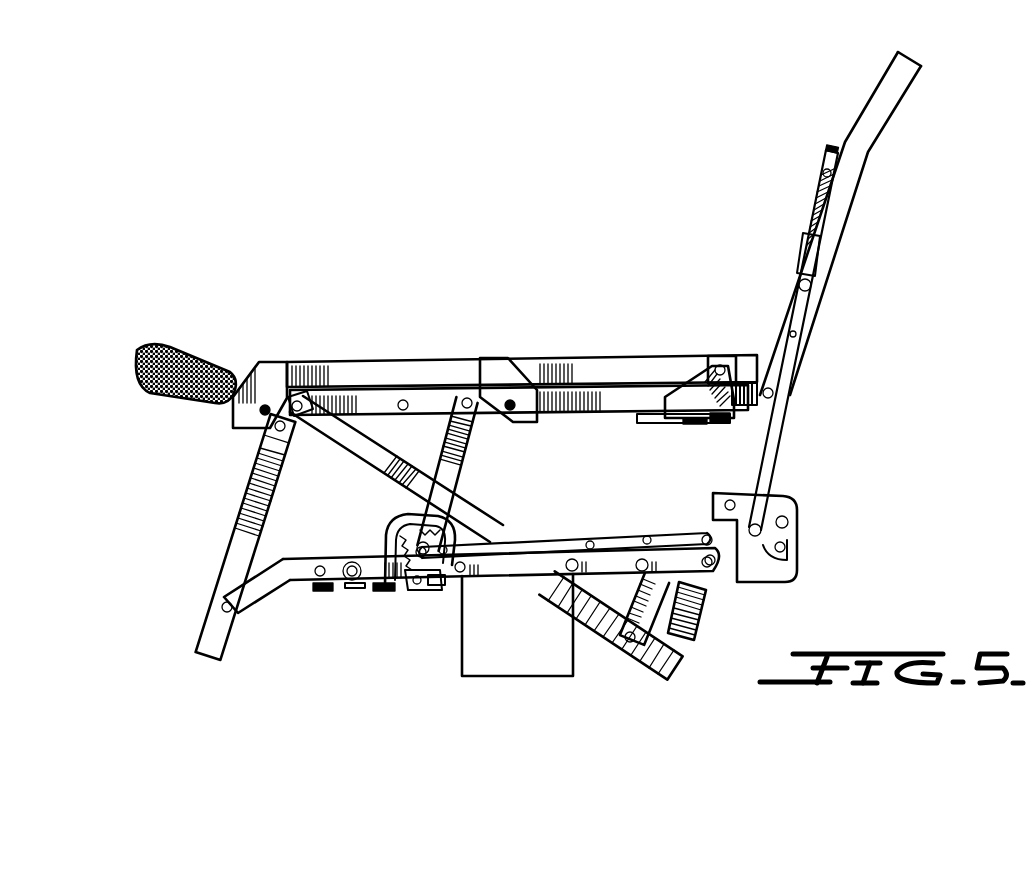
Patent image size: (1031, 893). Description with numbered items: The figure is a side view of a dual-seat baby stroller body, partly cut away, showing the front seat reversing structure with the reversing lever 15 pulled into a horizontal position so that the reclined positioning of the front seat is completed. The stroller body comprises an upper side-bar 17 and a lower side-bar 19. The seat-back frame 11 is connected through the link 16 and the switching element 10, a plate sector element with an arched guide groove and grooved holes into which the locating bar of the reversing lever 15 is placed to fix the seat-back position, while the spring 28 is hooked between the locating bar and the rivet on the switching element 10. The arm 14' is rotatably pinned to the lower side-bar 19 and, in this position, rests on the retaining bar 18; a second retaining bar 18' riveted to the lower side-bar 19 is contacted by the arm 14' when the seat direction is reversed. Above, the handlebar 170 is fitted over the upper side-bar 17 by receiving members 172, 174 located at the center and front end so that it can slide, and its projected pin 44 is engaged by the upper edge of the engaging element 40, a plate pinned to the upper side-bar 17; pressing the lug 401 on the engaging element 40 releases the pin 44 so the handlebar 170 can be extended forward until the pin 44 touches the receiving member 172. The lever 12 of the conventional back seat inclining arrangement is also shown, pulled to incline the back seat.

The switching element 10 is at (435, 581).
The seat-back frame 11 is at (664, 540).
The lever 12 is at (803, 353).
The arm 14' is at (352, 612).
The reversing lever 15 is at (627, 542).
The link 16 is at (455, 471).
The upper side-bar 17 is at (612, 405).
The retaining bar 18 is at (379, 627).
The retaining bar 18' is at (306, 627).
The lower side-bar 19 is at (508, 575).
The spring 28 is at (420, 592).
The engaging element 40 is at (702, 390).
The projected pin 44 is at (728, 367).
The handlebar 170 is at (604, 368).
The receiving member 172 is at (495, 375).
The receiving member 174 is at (268, 386).
The lug 401 is at (713, 418).